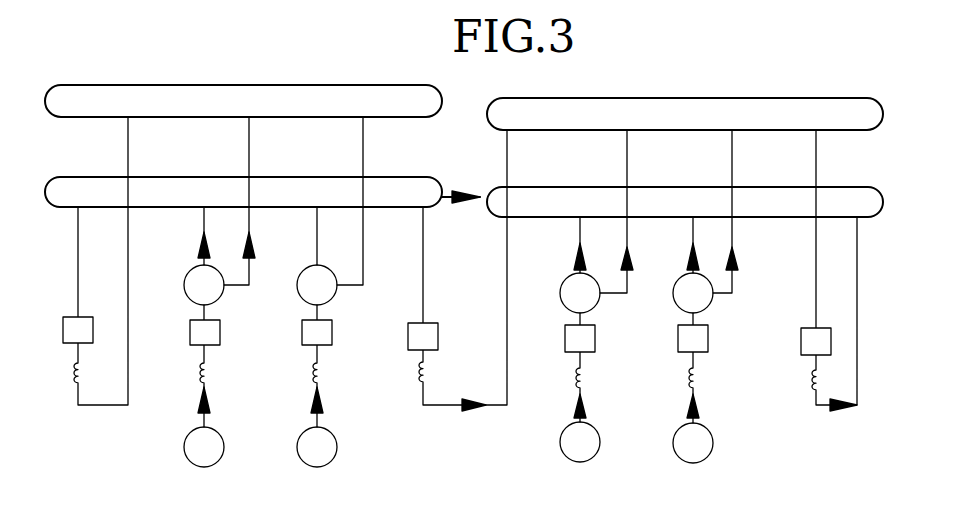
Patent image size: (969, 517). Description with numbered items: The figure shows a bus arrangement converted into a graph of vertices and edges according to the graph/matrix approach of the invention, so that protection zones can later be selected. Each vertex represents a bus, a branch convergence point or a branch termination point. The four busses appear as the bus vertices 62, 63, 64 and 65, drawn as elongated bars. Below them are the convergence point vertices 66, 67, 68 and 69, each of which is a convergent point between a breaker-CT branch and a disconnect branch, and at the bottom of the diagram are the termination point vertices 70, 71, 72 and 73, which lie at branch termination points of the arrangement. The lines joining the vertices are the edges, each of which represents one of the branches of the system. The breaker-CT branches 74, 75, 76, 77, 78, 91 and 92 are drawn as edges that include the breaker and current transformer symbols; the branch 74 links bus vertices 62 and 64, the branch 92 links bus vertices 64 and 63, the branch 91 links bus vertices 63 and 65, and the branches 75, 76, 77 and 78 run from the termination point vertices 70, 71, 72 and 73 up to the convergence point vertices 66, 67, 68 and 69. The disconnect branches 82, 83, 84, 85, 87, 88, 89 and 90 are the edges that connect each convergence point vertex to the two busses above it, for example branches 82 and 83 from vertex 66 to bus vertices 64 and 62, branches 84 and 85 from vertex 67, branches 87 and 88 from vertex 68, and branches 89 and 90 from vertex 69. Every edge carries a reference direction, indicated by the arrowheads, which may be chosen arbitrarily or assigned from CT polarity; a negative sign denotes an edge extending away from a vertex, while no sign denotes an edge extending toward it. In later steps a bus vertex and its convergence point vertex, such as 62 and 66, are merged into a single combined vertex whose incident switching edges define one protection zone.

The bus vertex 62 is at (249, 85).
The bus vertex 63 is at (715, 98).
The bus vertex 64 is at (273, 177).
The bus vertex 65 is at (742, 187).
The convergence point vertex 66 is at (186, 292).
The convergence point vertex 67 is at (297, 292).
The convergence point vertex 68 is at (561, 296).
The convergence point vertex 69 is at (715, 300).
The termination point vertex 70 is at (184, 440).
The termination point vertex 71 is at (297, 440).
The termination point vertex 72 is at (560, 447).
The termination point vertex 73 is at (673, 448).
The breaker-CT branch 74 is at (78, 237).
The breaker-CT branch 75 is at (198, 421).
The breaker-CT branch 76 is at (322, 425).
The breaker-CT branch 77 is at (586, 413).
The breaker-CT branch 78 is at (698, 413).
The disconnect branch 82 is at (200, 222).
The disconnect branch 83 is at (238, 292).
The disconnect branch 84 is at (316, 224).
The disconnect branch 85 is at (364, 228).
The disconnect branch 87 is at (577, 228).
The disconnect branch 88 is at (610, 296).
The disconnect branch 89 is at (690, 228).
The disconnect branch 90 is at (736, 284).
The breaker-CT branch 91 is at (858, 288).
The breaker-CT branch 92 is at (452, 405).